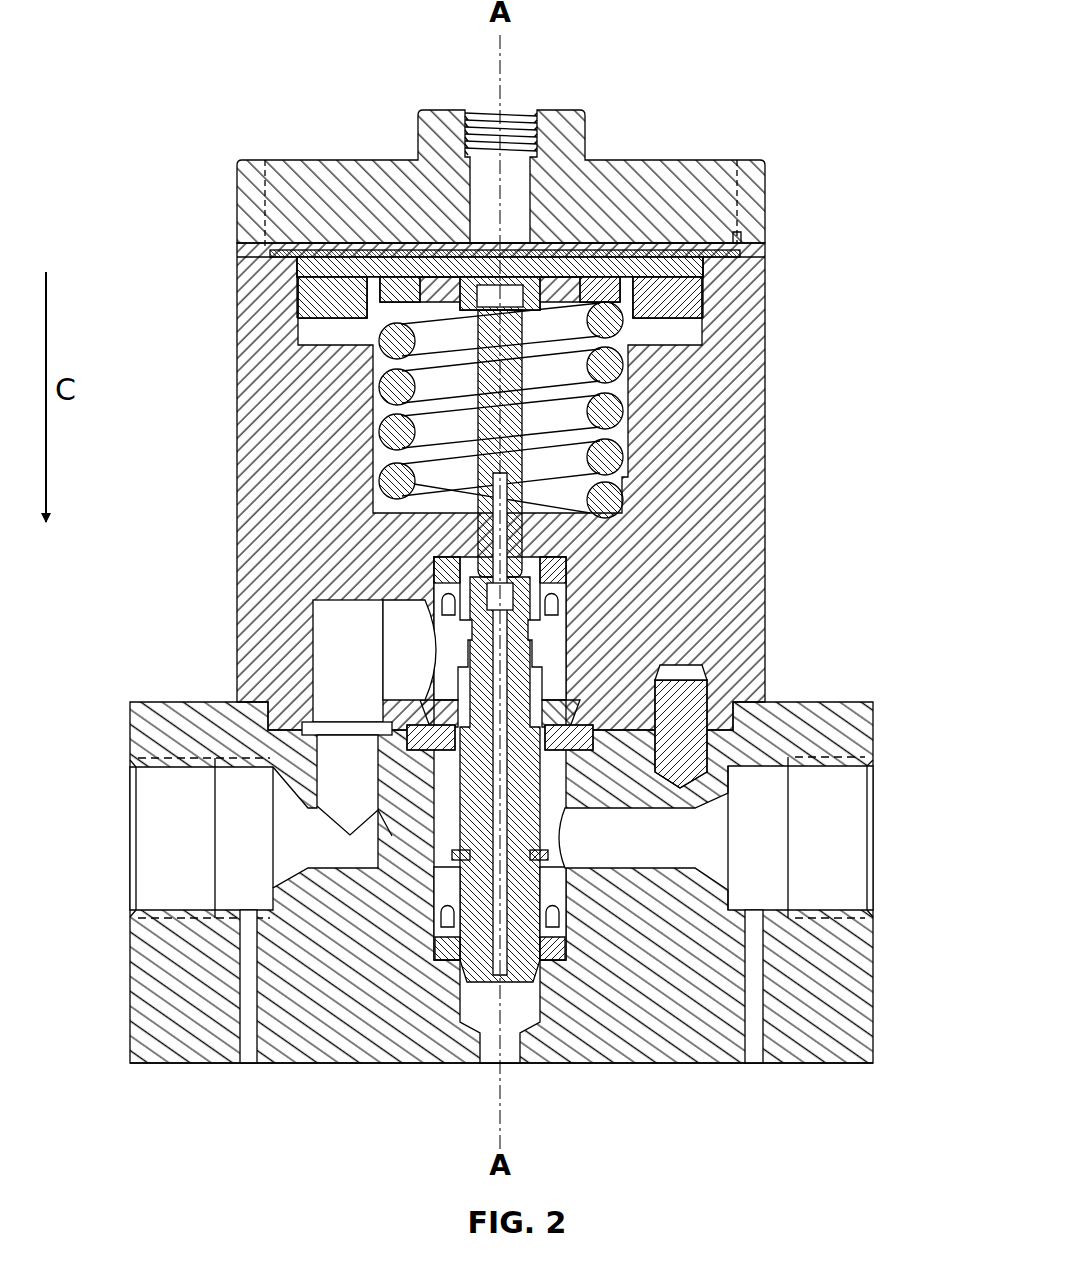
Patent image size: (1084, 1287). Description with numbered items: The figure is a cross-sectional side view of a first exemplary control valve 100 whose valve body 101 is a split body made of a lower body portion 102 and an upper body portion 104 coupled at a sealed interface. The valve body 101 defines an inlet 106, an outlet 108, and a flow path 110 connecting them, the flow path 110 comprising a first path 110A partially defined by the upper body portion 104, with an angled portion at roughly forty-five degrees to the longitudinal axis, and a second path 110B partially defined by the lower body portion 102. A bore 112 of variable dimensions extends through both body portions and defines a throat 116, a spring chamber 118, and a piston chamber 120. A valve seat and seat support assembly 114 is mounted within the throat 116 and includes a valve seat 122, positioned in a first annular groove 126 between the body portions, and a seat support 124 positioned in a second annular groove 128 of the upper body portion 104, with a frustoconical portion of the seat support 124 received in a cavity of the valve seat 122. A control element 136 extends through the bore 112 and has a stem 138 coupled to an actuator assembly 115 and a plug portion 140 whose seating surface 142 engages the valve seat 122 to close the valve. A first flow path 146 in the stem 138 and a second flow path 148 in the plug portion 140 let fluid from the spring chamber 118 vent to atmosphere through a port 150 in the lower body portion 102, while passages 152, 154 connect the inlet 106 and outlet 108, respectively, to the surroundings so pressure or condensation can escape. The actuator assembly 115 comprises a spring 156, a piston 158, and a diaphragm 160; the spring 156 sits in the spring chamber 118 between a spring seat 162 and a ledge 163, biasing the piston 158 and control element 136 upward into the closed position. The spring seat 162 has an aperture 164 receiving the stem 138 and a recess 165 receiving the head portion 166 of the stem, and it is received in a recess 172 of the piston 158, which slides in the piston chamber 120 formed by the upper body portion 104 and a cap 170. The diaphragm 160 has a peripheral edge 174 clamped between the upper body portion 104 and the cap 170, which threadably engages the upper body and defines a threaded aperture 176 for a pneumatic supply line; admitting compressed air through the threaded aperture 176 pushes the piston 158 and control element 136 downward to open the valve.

The control valve 100 is at (200, 38).
The valve body 101 is at (255, 535).
The lower body portion 102 is at (868, 1015).
The upper body portion 104 is at (755, 410).
The inlet 106 is at (868, 912).
The outlet 108 is at (135, 915).
The flow path 110 is at (325, 661).
The first path 110A is at (330, 673).
The second path 110B is at (633, 850).
The bore 112 is at (622, 833).
The valve seat and seat support assembly 114 is at (588, 652).
The actuator assembly 115 is at (748, 232).
The throat 116 is at (562, 858).
The spring chamber 118 is at (375, 455).
The piston chamber 120 is at (310, 335).
The valve seat 122 is at (590, 738).
The seat support 124 is at (568, 713).
The first annular groove 126 is at (400, 748).
The second annular groove 128 is at (423, 722).
The control element 136 is at (470, 515).
The stem 138 is at (377, 410).
The plug portion 140 is at (685, 720).
The seating surface 142 is at (447, 745).
The first flow path 146 is at (540, 548).
The second flow path 148 is at (505, 972).
The port 150 is at (480, 1043).
The passage 152 is at (757, 1063).
The passage 154 is at (250, 1063).
The spring 156 is at (377, 475).
The piston 158 is at (300, 283).
The diaphragm 160 is at (270, 250).
The spring seat 162 is at (310, 293).
The ledge 163 is at (400, 512).
The aperture 164 is at (620, 320).
The recess 165 is at (533, 285).
The head portion 166 is at (487, 292).
The cap 170 is at (305, 163).
The recess 172 is at (628, 285).
The peripheral edge 174 is at (742, 252).
The threaded aperture 176 is at (485, 112).